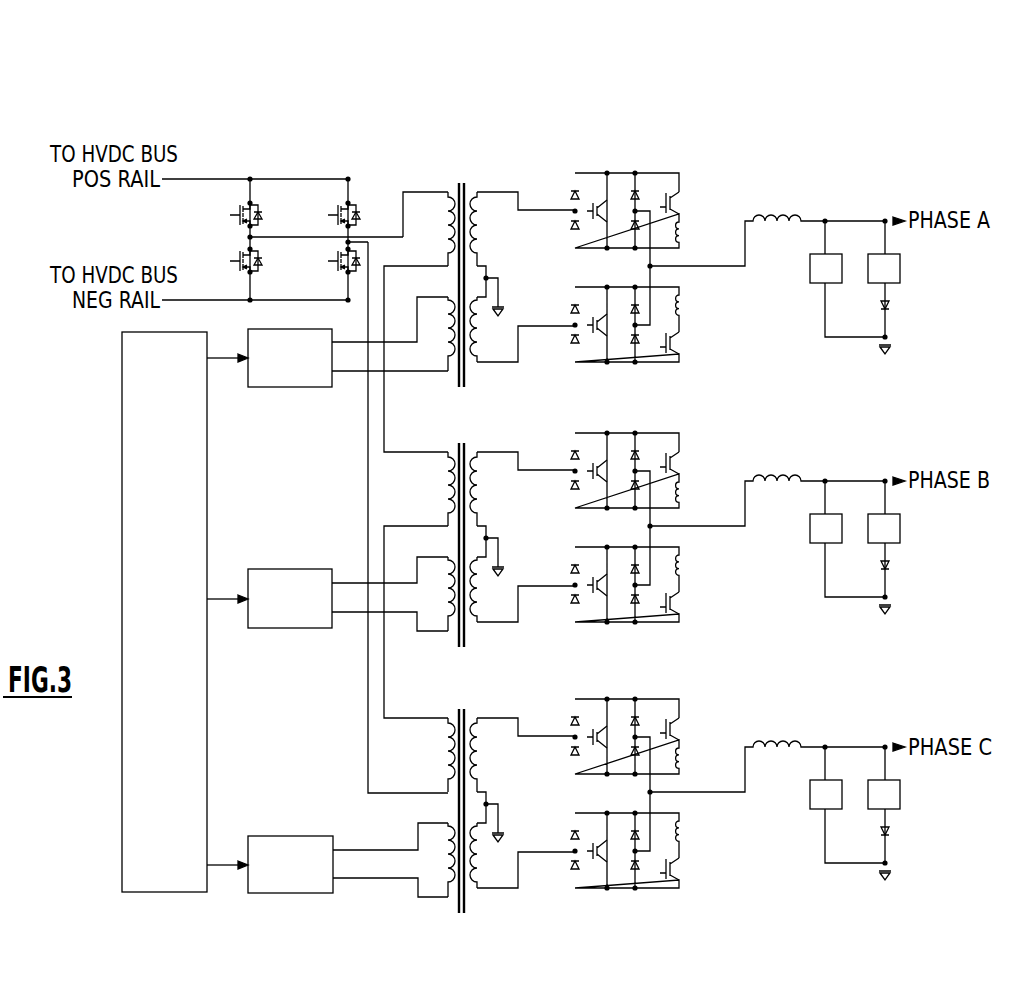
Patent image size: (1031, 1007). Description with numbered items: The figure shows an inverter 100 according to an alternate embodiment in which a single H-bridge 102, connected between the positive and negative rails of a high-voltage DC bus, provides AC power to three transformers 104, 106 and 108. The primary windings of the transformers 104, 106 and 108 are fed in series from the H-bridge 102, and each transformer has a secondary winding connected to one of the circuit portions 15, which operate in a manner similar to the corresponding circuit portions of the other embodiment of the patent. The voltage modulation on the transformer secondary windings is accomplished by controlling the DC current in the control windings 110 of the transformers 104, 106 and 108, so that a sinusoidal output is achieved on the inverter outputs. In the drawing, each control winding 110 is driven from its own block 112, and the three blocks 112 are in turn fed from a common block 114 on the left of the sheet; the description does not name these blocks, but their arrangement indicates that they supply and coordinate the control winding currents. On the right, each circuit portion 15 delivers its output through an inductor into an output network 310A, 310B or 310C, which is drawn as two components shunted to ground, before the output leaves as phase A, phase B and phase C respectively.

The circuit portion 15 is at (556, 179).
The inverter 100 is at (80, 236).
The H-bridge 102 is at (283, 179).
The transformer 104 is at (467, 186).
The transformer 106 is at (467, 447).
The transformer 108 is at (467, 713).
The control winding 110 is at (448, 320).
The gate driver 112 is at (303, 387).
The controller 114 is at (122, 519).
The phase A output filter 310A is at (911, 269).
The phase B output filter 310B is at (911, 529).
The phase C output filter 310C is at (911, 797).